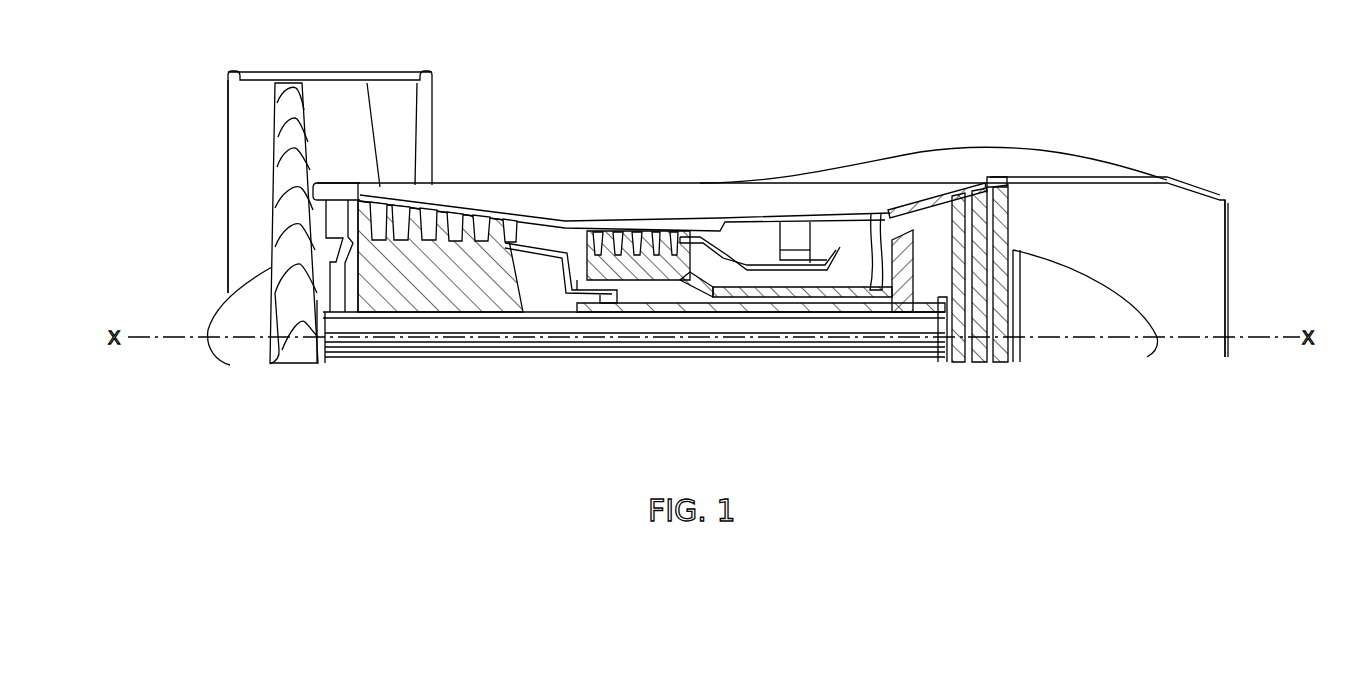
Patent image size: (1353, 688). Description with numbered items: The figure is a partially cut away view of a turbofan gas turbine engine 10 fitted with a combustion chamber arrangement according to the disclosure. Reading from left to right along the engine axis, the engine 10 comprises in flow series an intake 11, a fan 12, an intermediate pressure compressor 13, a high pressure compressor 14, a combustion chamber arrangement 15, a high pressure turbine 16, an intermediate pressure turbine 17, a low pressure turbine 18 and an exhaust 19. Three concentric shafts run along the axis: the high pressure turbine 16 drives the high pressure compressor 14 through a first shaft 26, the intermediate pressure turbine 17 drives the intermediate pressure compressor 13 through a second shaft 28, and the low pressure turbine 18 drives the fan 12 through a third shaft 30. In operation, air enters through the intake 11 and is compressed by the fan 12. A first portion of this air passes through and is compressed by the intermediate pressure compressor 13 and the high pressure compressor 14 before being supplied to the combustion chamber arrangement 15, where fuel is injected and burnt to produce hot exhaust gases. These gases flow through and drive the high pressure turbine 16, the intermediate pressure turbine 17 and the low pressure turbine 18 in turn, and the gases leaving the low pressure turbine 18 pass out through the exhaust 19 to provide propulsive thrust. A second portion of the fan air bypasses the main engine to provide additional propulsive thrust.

The turbofan gas turbine engine 10 is at (612, 96).
The intake 11 is at (200, 200).
The fan 12 is at (297, 107).
The intermediate pressure compressor 13 is at (437, 252).
The high pressure compressor 14 is at (640, 230).
The combustion chamber arrangement 15 is at (797, 211).
The high pressure turbine 16 is at (880, 222).
The intermediate pressure turbine 17 is at (917, 213).
The low pressure turbine 18 is at (1003, 207).
The exhaust 19 is at (1213, 280).
The first shaft 26 is at (862, 287).
The second shaft 28 is at (583, 317).
The third shaft 30 is at (470, 363).